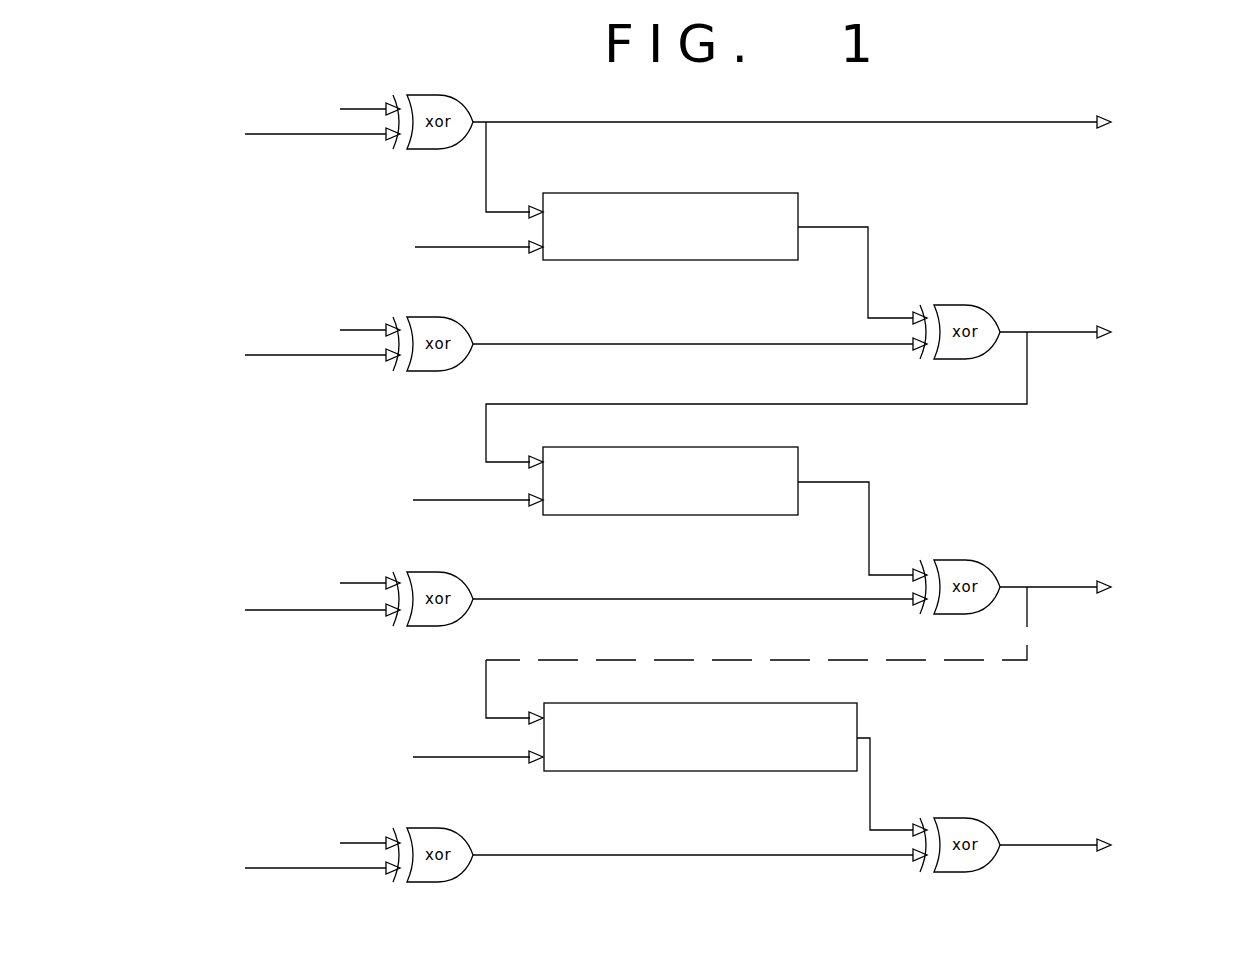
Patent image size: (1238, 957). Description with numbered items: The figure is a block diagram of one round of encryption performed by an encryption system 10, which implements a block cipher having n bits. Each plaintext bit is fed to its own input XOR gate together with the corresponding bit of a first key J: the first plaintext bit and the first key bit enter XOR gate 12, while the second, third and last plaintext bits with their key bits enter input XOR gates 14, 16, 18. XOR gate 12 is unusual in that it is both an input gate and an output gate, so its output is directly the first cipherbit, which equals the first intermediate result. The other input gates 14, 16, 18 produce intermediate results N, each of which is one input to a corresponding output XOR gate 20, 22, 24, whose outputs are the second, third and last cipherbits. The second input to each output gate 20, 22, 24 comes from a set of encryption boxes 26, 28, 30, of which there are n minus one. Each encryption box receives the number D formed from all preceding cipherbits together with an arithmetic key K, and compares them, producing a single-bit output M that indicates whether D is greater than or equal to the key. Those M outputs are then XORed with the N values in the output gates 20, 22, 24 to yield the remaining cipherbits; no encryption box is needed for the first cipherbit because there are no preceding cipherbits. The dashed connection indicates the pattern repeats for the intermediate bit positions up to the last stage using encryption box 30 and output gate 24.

The encryption system 10 is at (988, 98).
The XOR gate 12 is at (448, 103).
The input XOR gate 14 is at (455, 335).
The input XOR gate 16 is at (452, 587).
The input XOR gate 18 is at (452, 840).
The output XOR gate 20 is at (977, 322).
The output XOR gate 22 is at (977, 578).
The output XOR gate 24 is at (975, 834).
The encryption box 26 is at (692, 200).
The encryption box 28 is at (785, 463).
The encryption box 30 is at (840, 718).